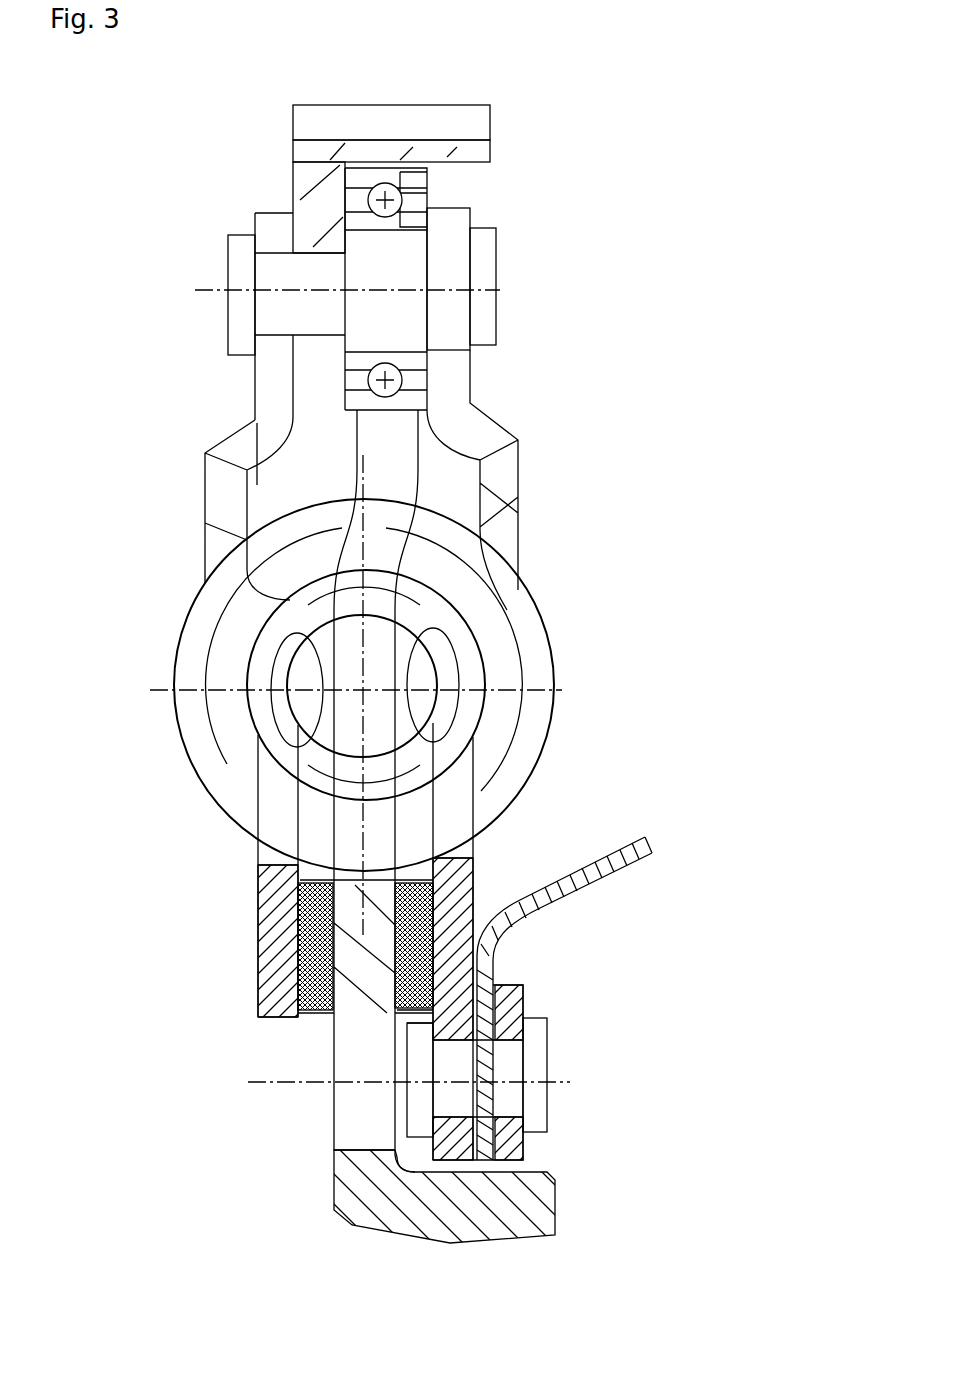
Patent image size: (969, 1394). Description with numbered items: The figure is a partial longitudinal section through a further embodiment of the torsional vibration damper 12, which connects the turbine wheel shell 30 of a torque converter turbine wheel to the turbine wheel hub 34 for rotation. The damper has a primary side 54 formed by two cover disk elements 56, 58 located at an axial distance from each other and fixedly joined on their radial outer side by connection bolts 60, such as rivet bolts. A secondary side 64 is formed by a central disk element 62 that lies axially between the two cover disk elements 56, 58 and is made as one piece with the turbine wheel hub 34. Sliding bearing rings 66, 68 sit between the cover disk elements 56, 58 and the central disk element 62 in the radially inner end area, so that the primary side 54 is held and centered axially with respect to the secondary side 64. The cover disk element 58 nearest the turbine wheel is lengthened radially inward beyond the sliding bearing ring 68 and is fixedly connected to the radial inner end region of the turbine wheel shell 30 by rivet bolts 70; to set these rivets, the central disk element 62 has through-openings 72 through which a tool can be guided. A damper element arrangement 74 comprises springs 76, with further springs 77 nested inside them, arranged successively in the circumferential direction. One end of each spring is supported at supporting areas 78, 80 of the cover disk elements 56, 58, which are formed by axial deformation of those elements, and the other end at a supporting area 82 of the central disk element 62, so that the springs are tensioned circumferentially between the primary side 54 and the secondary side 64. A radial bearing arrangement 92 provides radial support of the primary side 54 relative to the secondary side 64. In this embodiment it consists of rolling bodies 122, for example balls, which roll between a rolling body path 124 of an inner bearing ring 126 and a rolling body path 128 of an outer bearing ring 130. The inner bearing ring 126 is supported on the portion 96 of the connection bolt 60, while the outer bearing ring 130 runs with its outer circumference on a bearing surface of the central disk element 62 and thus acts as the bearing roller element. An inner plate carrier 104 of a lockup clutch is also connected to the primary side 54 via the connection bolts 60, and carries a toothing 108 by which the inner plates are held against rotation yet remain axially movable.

The torsional vibration damper 12 is at (424, 926).
The turbine wheel shell 30 is at (605, 880).
The turbine wheel hub 34 is at (555, 1203).
The primary side 54 is at (320, 480).
The cover disk element 56 is at (222, 482).
The cover disk element 58 is at (513, 433).
The connection bolt 60 is at (278, 275).
The central disk element 62 is at (258, 993).
The secondary side 64 is at (285, 1112).
The sliding bearing ring 66 is at (300, 910).
The sliding bearing ring 68 is at (430, 945).
The rivet bolt 70 is at (497, 1100).
The through-opening 72 is at (362, 1117).
The damper element arrangement 74 is at (393, 654).
The spring 76 is at (548, 658).
The spring 77 is at (472, 738).
The supporting area 78 is at (224, 551).
The supporting area 80 is at (510, 537).
The supporting area 82 is at (397, 523).
The radial bearing arrangement 92 is at (391, 264).
The portion of the connection bolt 96 is at (370, 325).
The inner plate carrier 104 is at (420, 150).
The toothing 108 is at (368, 120).
The rolling body 122 is at (403, 370).
The rolling body path 124 is at (392, 218).
The inner bearing ring 126 is at (430, 343).
The rolling body path 128 is at (378, 193).
The outer bearing ring 130 is at (345, 392).